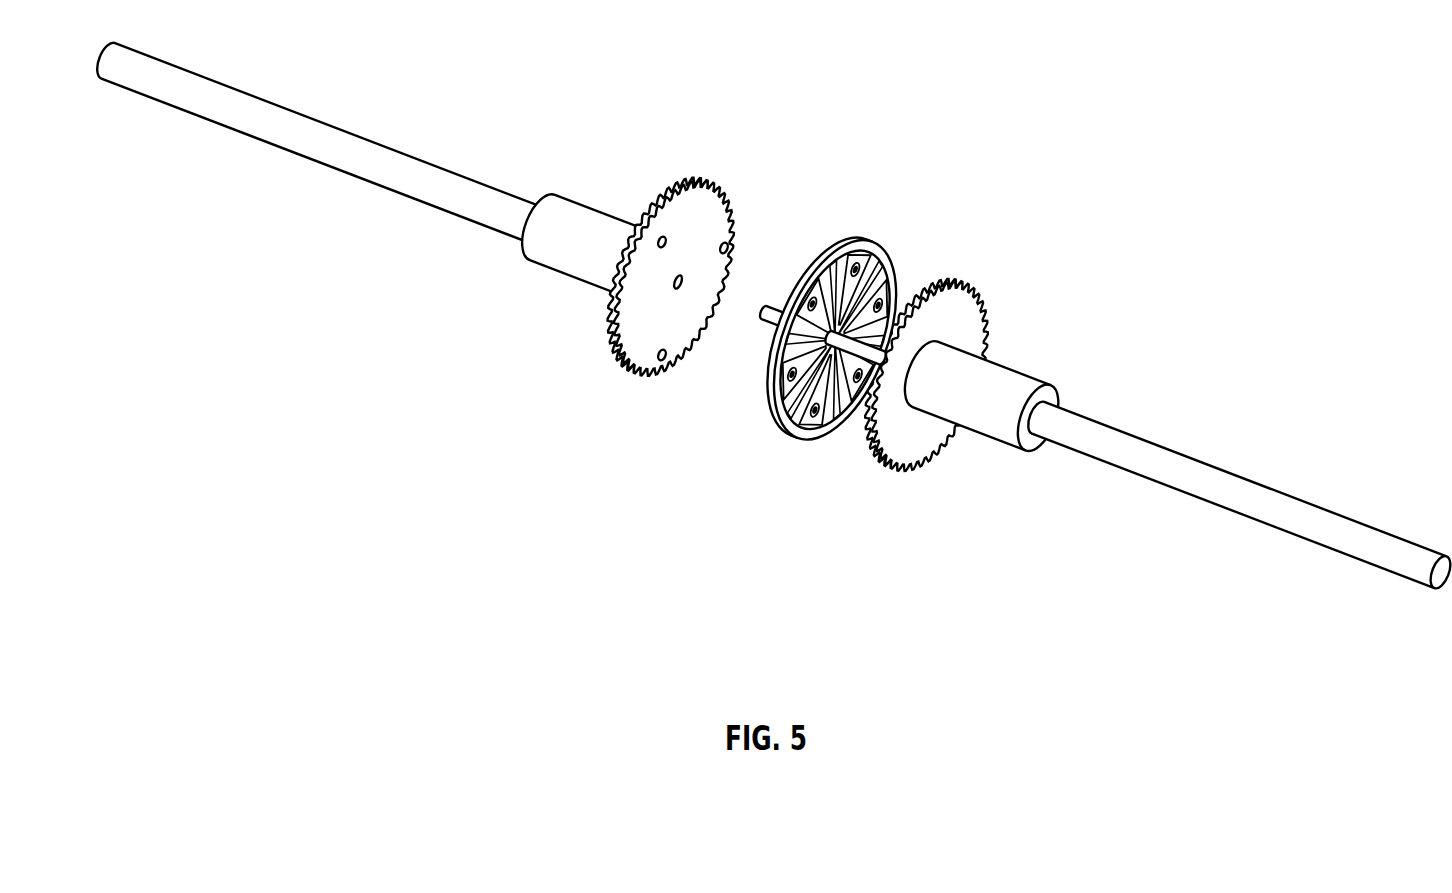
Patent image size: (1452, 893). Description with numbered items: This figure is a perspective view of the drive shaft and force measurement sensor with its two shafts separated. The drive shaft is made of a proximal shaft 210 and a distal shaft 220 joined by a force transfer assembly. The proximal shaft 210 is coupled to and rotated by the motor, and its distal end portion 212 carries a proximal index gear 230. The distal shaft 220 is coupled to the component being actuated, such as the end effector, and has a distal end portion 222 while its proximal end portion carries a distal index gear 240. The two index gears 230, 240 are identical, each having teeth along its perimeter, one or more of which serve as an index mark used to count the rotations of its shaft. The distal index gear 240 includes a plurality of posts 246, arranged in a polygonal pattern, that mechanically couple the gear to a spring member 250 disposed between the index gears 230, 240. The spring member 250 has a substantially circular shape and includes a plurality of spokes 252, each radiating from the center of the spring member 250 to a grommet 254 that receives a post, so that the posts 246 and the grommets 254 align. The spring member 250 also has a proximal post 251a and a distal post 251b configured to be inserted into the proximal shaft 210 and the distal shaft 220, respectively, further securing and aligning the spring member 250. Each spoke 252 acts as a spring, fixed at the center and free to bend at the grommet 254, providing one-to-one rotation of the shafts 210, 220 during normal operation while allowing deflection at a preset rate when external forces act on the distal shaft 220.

The proximal shaft 210 is at (1266, 497).
The distal end portion 212 is at (1019, 380).
The distal shaft 220 is at (304, 127).
The distal end portion 222 is at (593, 222).
The proximal index gear 230 is at (971, 324).
The distal index gear 240 is at (712, 200).
The posts 246 is at (661, 362).
The spring member 250 is at (837, 367).
The proximal post 251a is at (880, 350).
The distal post 251b is at (778, 313).
The spokes 252 is at (812, 397).
The grommet 254 is at (817, 423).